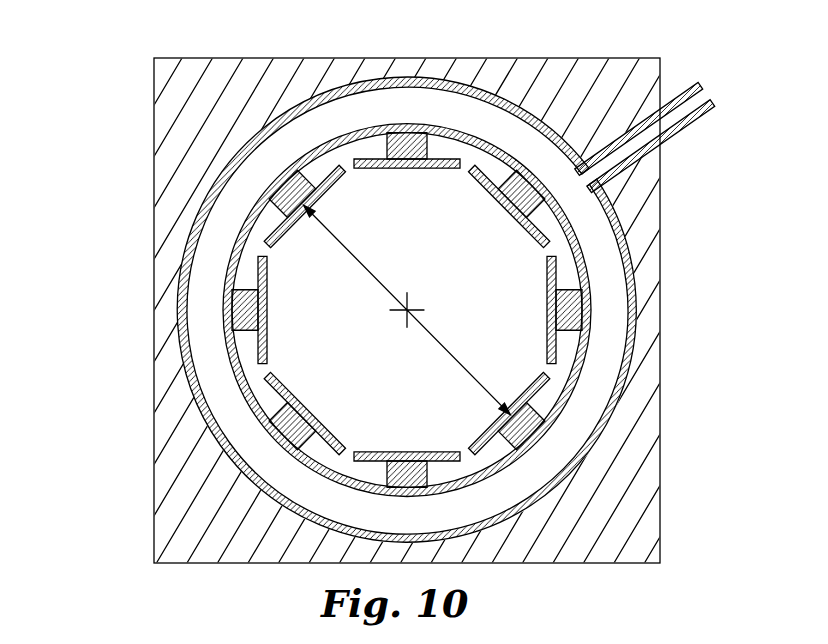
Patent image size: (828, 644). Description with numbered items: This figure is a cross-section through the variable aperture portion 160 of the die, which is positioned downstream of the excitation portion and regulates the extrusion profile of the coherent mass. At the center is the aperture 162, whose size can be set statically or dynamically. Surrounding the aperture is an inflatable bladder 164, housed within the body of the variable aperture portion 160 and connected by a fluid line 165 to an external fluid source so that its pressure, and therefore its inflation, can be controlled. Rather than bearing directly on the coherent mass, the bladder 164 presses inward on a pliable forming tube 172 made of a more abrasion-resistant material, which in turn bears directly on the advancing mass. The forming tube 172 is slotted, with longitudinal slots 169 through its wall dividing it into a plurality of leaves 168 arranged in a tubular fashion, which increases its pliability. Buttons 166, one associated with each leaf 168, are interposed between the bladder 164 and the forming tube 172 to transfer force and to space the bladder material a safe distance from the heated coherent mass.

The variable aperture portion 160 is at (134, 71).
The aperture 162 is at (383, 281).
The bladder 164 is at (223, 404).
The fluid line 165 is at (709, 94).
The button 166 is at (232, 299).
The leaf 168 is at (277, 382).
The longitudinal slot 169 is at (462, 170).
The forming tube 172 is at (547, 316).